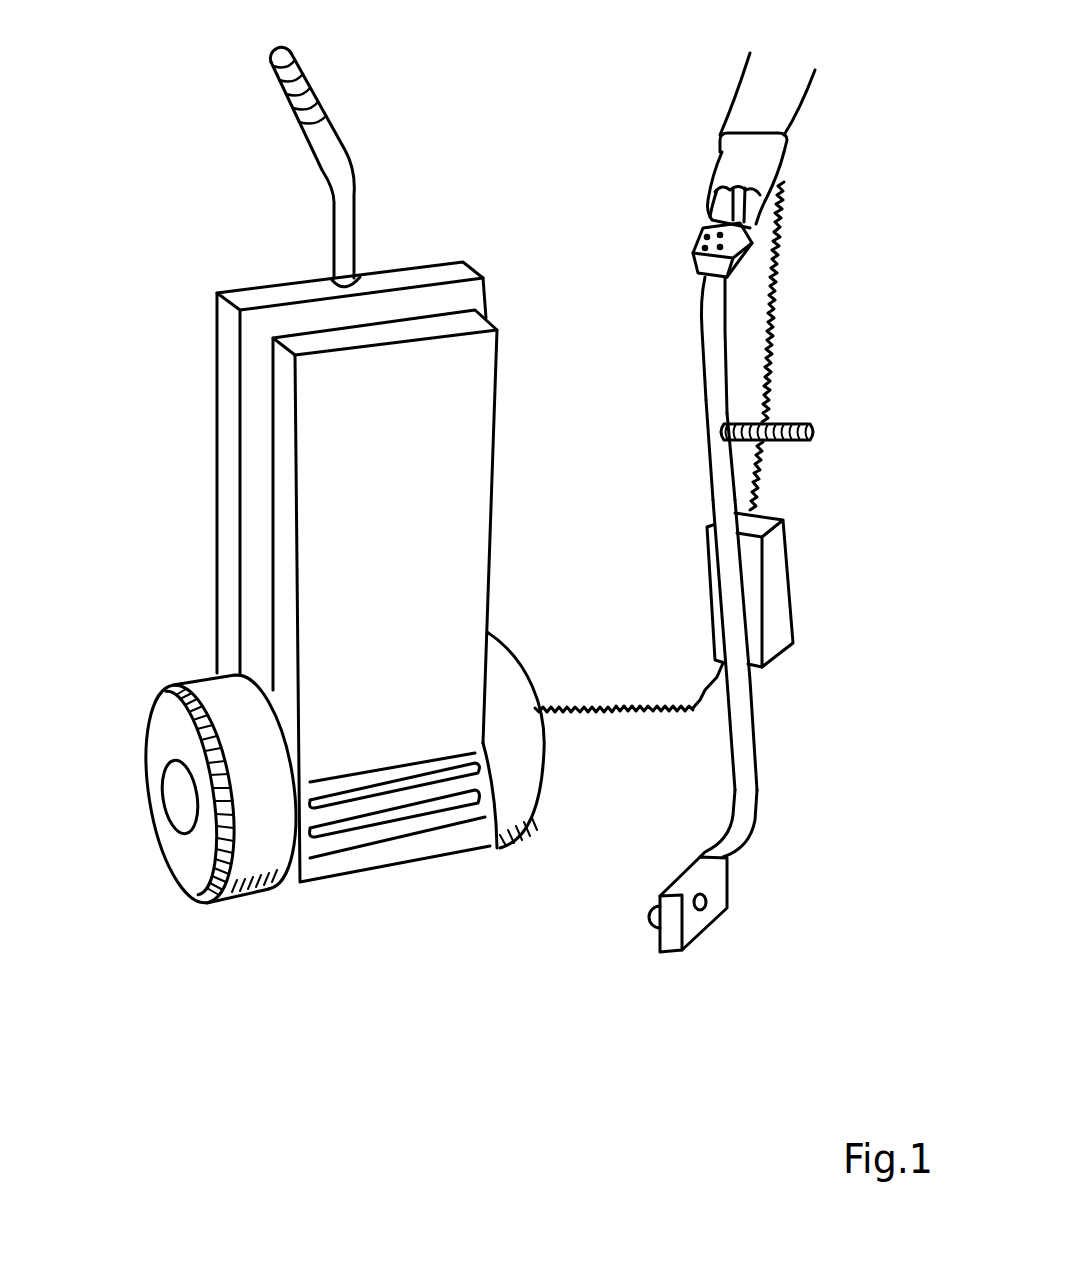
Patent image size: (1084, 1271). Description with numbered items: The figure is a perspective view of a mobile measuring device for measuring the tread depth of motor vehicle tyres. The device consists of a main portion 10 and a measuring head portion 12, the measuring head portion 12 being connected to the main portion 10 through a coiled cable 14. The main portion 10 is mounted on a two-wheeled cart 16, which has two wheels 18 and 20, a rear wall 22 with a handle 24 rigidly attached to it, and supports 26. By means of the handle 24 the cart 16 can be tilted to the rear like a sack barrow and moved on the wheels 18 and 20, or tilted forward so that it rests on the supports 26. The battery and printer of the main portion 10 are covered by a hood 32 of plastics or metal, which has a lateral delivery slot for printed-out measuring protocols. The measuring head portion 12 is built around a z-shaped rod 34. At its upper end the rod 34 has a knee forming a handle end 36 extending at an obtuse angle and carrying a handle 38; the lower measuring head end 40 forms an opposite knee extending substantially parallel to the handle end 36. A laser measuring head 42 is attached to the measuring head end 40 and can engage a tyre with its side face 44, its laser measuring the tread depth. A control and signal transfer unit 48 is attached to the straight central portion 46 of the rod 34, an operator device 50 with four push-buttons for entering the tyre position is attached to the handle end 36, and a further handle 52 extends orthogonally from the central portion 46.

The main portion 10 is at (527, 319).
The measuring head portion 12 is at (745, 360).
The coiled cable 14 is at (780, 283).
The two-wheeled cart 16 is at (500, 605).
The wheel 18 is at (522, 783).
The wheel 20 is at (167, 728).
The rear wall 22 is at (302, 292).
The handle 24 is at (302, 82).
The supports 26 is at (377, 863).
The hood 32 is at (478, 487).
The z-shaped rod 34 is at (722, 452).
The handle end 36 is at (710, 320).
The handle 38 is at (782, 178).
The measuring head end 40 is at (738, 845).
The laser measuring head 42 is at (690, 877).
The side face 44 is at (700, 920).
The straight central portion 46 is at (738, 713).
The control and signal transfer unit 48 is at (795, 567).
The operator device 50 is at (705, 230).
The handle 52 is at (790, 427).